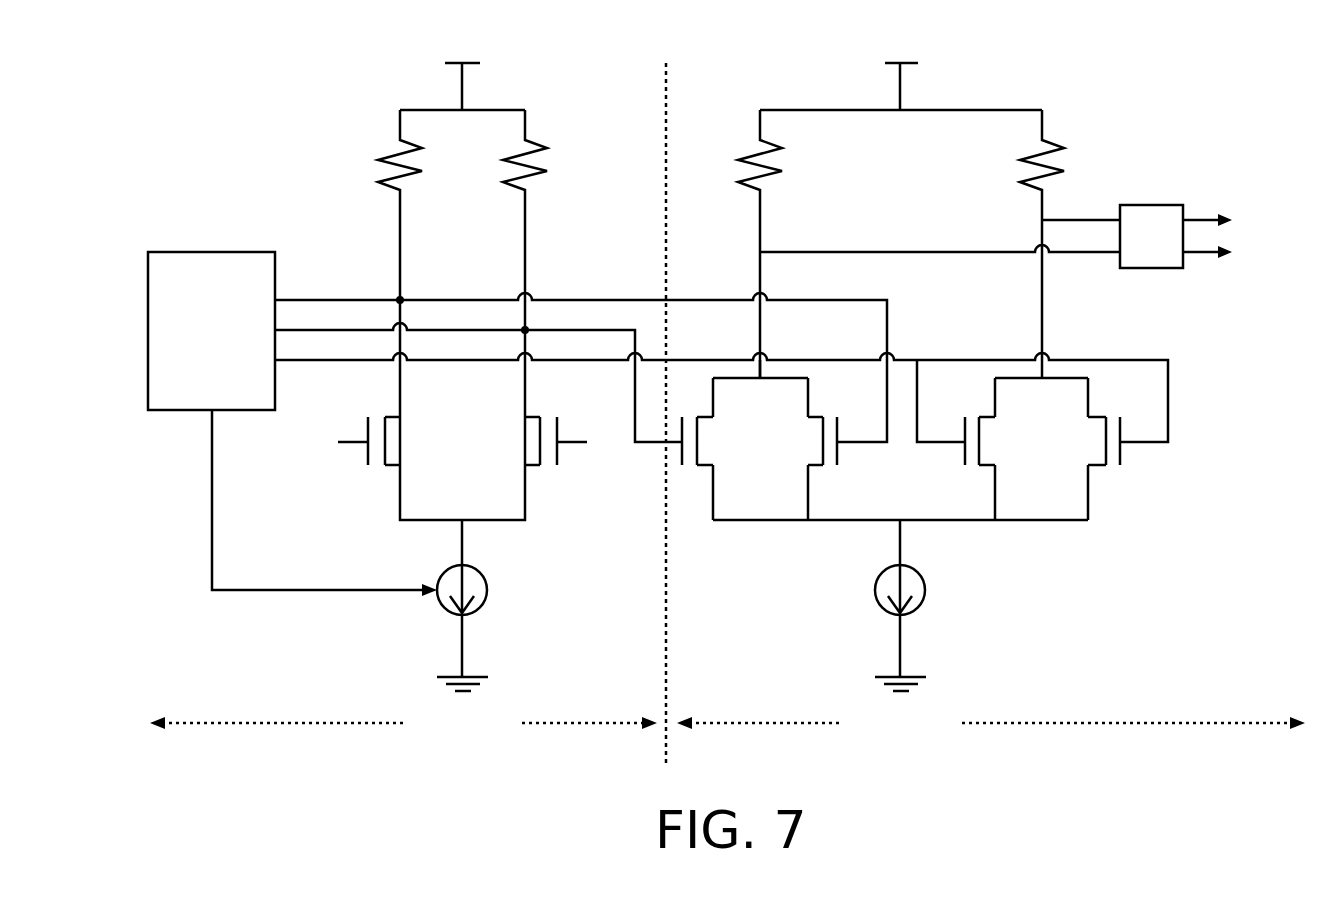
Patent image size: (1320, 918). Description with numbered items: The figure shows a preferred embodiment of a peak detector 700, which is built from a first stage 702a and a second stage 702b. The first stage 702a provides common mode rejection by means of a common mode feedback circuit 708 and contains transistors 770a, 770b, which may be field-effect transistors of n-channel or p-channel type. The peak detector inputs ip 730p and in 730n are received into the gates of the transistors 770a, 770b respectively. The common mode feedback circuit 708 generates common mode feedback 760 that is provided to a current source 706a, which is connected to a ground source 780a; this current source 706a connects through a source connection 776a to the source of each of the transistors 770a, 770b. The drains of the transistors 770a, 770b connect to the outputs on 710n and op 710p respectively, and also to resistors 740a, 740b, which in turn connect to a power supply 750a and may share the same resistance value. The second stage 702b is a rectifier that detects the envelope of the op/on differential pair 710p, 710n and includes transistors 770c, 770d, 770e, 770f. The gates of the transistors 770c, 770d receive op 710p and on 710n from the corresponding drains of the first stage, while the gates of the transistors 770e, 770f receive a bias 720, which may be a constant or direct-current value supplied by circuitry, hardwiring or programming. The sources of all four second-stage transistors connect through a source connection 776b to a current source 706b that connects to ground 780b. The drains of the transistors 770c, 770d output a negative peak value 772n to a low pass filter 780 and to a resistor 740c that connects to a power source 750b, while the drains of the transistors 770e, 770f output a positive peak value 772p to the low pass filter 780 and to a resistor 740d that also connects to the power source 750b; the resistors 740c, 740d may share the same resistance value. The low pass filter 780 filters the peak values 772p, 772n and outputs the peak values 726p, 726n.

The peak detector 700 is at (690, 43).
The first stage 702a is at (403, 747).
The second stage 702b is at (991, 747).
The current source 706a is at (499, 590).
The current source 706b is at (938, 590).
The common mode feedback circuit 708 is at (211, 313).
The "on" output 710n is at (581, 355).
The "op" output 710p is at (478, 370).
The bias 720 is at (748, 385).
The positive output peak value 726p is at (1243, 204).
The negative output peak value 726n is at (1243, 267).
The peak detector input "ip" 730p is at (332, 455).
The peak detector input "in" 730n is at (594, 455).
The resistor 740a is at (413, 263).
The resistor 740b is at (564, 263).
The resistor 740c is at (890, 244).
The resistor 740d is at (1003, 244).
The power supply 750a is at (494, 79).
The power source 750b is at (934, 79).
The common mode feedback 760 is at (324, 518).
The transistor 770a is at (409, 441).
The transistor 770b is at (516, 441).
The transistor 770c is at (723, 449).
The transistor 770d is at (795, 440).
The transistor 770e is at (1006, 449).
The transistor 770f is at (1076, 449).
The negative peak value 772n is at (940, 235).
The positive peak value 772p is at (1081, 203).
The source connection 776a is at (466, 491).
The source connection 776b is at (900, 542).
The low pass filter 780 is at (1151, 222).
The ground source 780a is at (500, 653).
The ground 780b is at (938, 653).